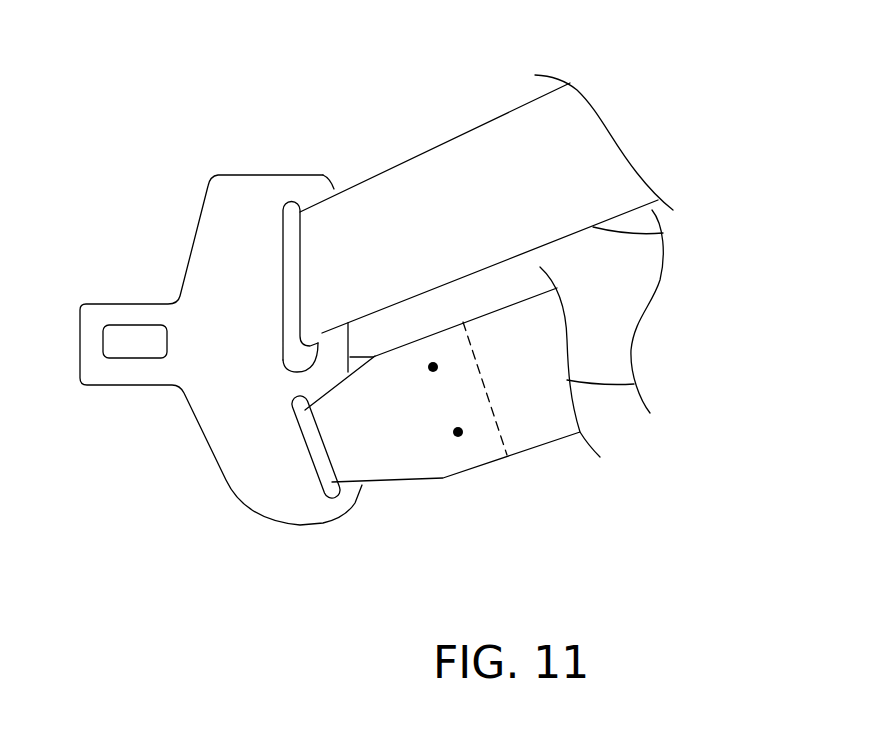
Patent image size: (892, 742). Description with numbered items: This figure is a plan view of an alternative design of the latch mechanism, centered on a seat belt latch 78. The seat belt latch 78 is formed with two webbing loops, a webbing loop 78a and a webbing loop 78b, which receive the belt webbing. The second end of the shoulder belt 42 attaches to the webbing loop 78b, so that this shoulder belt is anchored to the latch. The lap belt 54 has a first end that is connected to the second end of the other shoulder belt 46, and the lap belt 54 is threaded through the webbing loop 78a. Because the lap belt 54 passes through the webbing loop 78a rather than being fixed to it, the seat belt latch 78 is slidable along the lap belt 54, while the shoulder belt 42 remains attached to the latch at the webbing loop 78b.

The seat belt latch 78 is at (210, 273).
The webbing loop 78a is at (328, 188).
The webbing loop 78b is at (353, 493).
The shoulder belt 46 is at (585, 147).
The lap belt 54 is at (603, 302).
The shoulder belt 42 is at (535, 403).